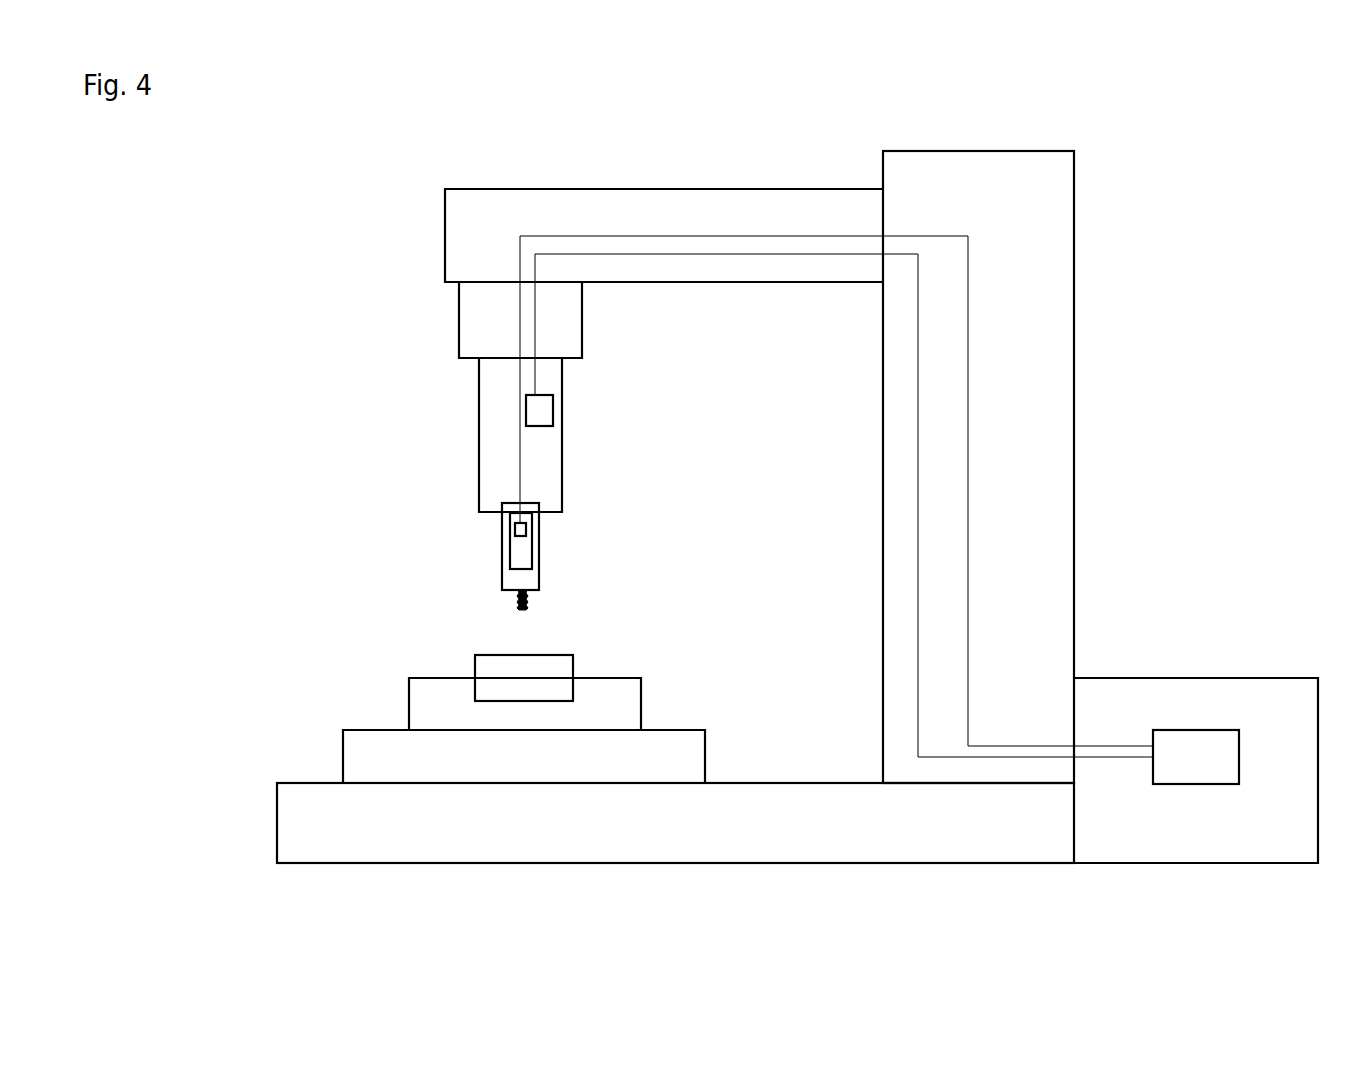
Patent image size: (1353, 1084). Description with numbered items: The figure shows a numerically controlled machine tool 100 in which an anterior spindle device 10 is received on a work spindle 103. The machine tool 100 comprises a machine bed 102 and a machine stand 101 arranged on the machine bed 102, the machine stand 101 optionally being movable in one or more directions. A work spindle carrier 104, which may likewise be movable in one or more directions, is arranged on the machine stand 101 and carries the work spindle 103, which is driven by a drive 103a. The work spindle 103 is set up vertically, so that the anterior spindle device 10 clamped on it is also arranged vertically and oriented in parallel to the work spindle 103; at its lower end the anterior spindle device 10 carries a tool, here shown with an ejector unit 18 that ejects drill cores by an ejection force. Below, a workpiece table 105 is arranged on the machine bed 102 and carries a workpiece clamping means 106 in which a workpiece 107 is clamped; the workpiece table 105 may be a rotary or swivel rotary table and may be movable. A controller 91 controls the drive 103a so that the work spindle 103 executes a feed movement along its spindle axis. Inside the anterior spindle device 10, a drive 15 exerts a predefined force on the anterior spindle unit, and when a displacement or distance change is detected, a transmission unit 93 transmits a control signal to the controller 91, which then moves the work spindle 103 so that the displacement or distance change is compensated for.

The machine tool 100 is at (322, 196).
The machine stand 101 is at (1075, 282).
The machine bed 102 is at (1037, 843).
The work spindle 103 is at (483, 442).
The drive 103a is at (525, 412).
The work spindle carrier 104 is at (778, 188).
The workpiece table 105 is at (343, 757).
The workpiece clamping means 106 is at (409, 705).
The workpiece 107 is at (475, 676).
The controller 91 is at (1212, 730).
The transmission unit 93 is at (515, 527).
The anterior spindle device 10 is at (502, 547).
The drive 15 is at (515, 560).
The ejector unit 18 is at (513, 600).